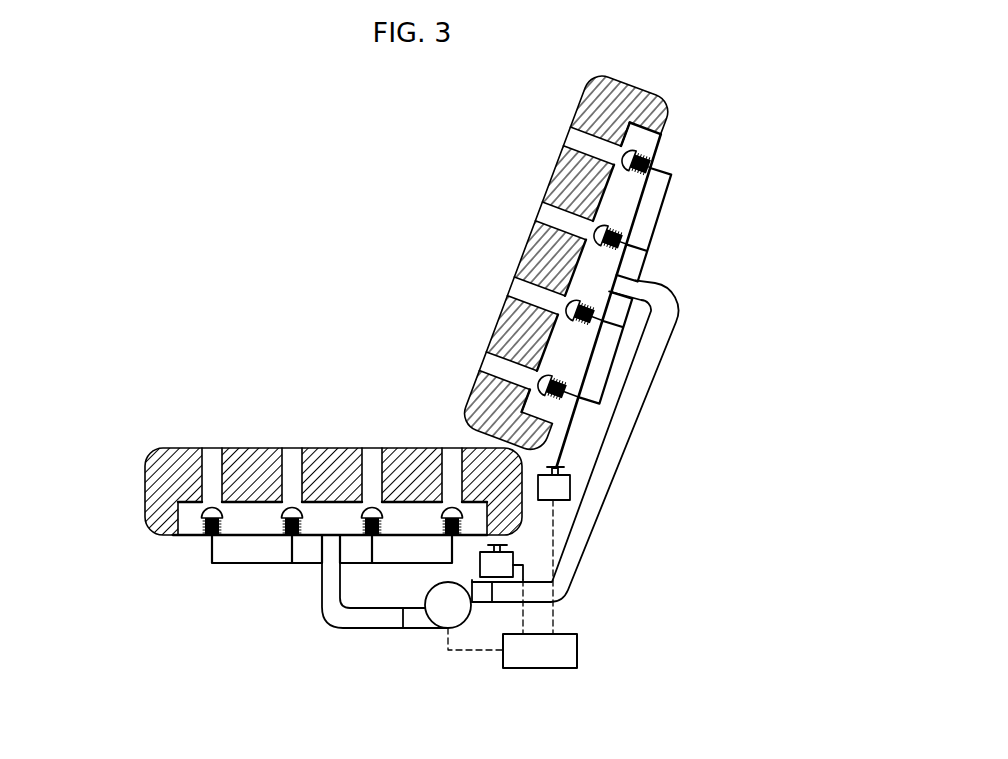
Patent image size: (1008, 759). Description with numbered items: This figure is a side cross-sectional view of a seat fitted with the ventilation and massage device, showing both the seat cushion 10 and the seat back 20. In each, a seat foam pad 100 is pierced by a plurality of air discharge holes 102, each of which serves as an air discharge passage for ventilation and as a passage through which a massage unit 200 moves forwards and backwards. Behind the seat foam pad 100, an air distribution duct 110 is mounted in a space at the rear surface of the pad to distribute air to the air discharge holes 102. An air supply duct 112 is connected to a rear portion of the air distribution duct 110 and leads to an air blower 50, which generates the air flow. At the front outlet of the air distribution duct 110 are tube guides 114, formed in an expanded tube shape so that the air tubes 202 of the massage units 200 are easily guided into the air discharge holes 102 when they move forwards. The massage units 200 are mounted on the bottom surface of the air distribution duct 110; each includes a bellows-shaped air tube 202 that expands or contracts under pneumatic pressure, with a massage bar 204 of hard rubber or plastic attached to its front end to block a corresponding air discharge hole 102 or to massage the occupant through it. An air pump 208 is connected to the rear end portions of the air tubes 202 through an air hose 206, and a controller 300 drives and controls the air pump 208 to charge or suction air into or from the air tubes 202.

The seat cushion 10 is at (505, 245).
The seat back 20 is at (158, 437).
The air blower 50 is at (440, 615).
The seat foam pad 100 is at (255, 463).
The air discharge hole 102 is at (292, 463).
The air distribution duct 110 is at (247, 527).
The air supply duct 112 is at (338, 626).
The tube guide 114 is at (628, 144).
The massage unit 200 is at (411, 373).
The air tube 202 is at (205, 530).
The massage bar 204 is at (201, 512).
The air hose 206 is at (278, 565).
The air pump 208 is at (508, 560).
The controller 300 is at (579, 650).